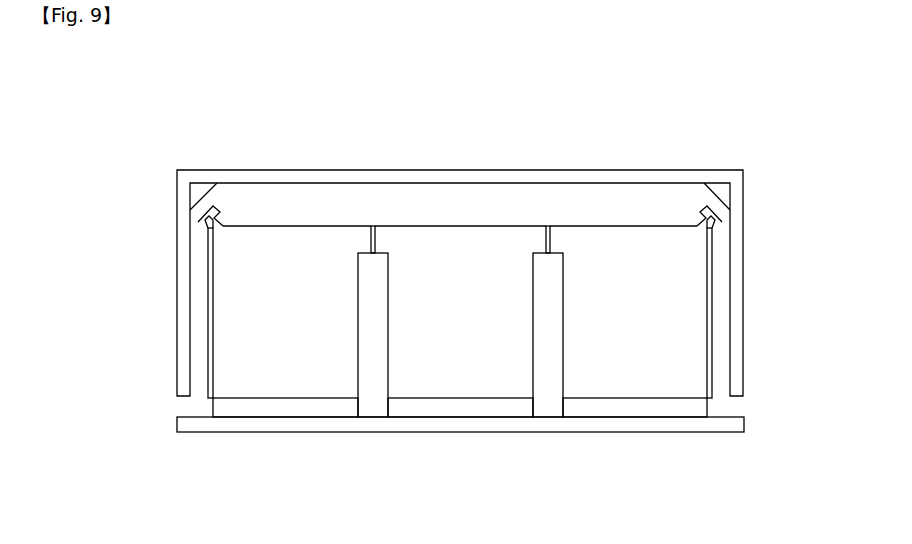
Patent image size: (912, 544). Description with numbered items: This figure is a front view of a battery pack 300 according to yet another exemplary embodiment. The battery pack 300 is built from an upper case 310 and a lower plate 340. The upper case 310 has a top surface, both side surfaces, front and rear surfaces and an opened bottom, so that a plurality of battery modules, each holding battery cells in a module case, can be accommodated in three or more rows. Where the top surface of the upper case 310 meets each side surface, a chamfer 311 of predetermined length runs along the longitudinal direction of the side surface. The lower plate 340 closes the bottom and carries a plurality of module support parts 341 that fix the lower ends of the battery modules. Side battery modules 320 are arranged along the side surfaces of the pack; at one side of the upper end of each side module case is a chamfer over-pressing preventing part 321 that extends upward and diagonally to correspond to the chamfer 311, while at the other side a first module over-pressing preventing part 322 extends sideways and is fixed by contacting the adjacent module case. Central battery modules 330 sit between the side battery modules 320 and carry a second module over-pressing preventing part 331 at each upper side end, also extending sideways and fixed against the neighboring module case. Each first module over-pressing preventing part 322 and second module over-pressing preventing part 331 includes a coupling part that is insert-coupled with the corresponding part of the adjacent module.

The battery pack 300 is at (161, 121).
The upper case 310 is at (737, 295).
The chamfer 311 is at (197, 193).
The side battery module 320 is at (268, 240).
The chamfer over-pressing preventing part 321 is at (195, 219).
The first module over-pressing preventing part 322 is at (364, 238).
The central battery module 330 is at (454, 242).
The second module over-pressing preventing part 331 is at (382, 238).
The lower plate 340 is at (745, 428).
The module support part 341 is at (282, 409).